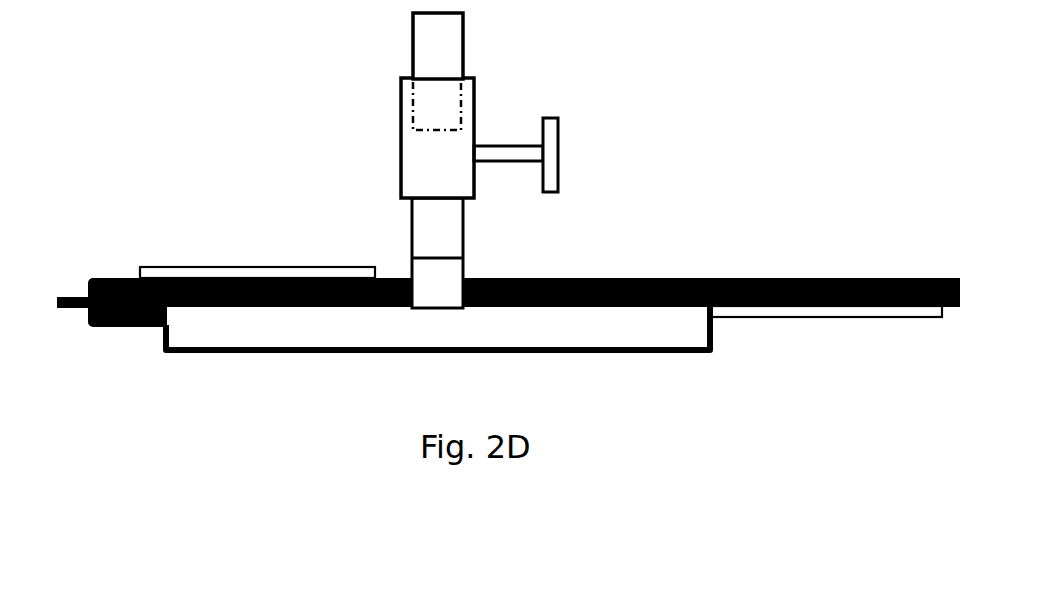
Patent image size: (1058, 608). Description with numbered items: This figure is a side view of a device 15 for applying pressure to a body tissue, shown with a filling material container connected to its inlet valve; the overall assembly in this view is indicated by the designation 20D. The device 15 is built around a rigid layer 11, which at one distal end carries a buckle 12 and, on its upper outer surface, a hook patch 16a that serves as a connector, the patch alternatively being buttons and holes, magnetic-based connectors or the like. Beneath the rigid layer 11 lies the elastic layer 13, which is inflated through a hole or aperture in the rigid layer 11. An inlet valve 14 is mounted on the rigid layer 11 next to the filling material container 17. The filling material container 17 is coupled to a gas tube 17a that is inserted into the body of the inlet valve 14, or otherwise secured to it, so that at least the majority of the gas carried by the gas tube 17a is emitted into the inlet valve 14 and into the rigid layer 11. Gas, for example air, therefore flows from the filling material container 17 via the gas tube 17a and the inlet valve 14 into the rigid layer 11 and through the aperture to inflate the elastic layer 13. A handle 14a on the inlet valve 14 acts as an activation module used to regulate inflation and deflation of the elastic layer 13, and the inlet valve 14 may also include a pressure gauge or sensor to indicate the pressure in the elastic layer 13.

The rigid layer 11 is at (898, 278).
The buckle 12 is at (70, 293).
The elastic layer 13 is at (262, 355).
The inlet valve 14 is at (401, 162).
The handle 14a is at (558, 143).
The device 15 is at (140, 360).
The hook patch 16a is at (230, 267).
The filling material container 17 is at (438, 46).
The gas tube 17a is at (463, 242).
The device 20D is at (736, 242).